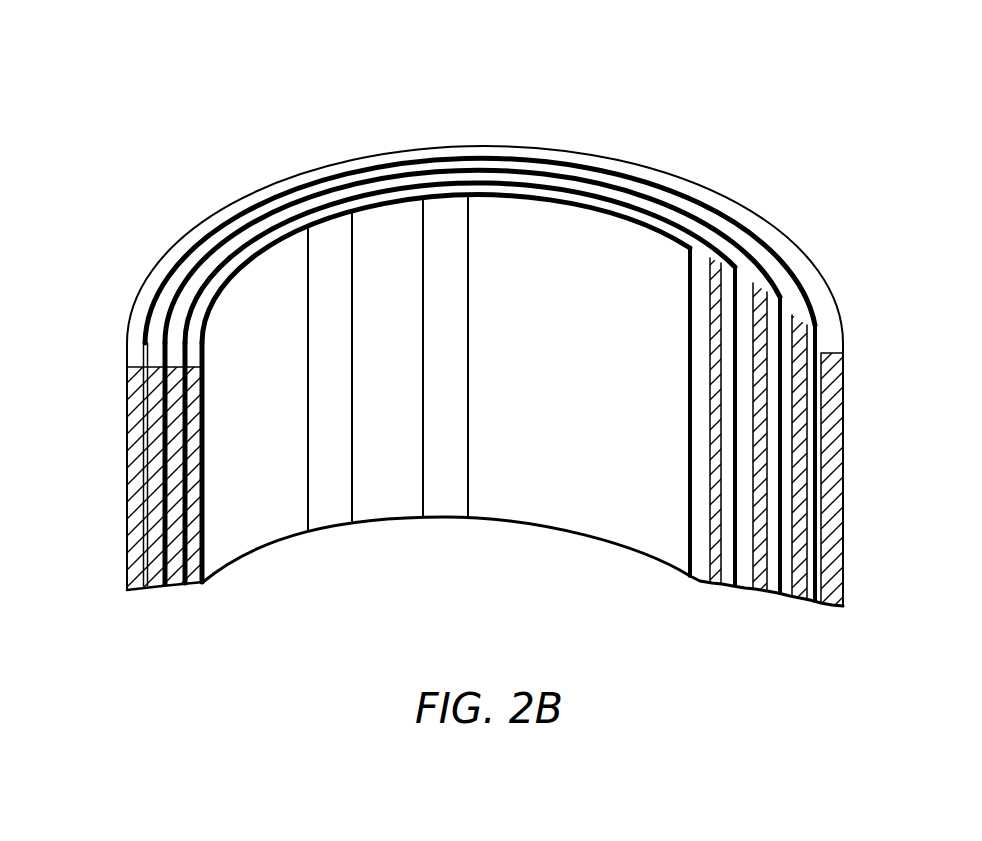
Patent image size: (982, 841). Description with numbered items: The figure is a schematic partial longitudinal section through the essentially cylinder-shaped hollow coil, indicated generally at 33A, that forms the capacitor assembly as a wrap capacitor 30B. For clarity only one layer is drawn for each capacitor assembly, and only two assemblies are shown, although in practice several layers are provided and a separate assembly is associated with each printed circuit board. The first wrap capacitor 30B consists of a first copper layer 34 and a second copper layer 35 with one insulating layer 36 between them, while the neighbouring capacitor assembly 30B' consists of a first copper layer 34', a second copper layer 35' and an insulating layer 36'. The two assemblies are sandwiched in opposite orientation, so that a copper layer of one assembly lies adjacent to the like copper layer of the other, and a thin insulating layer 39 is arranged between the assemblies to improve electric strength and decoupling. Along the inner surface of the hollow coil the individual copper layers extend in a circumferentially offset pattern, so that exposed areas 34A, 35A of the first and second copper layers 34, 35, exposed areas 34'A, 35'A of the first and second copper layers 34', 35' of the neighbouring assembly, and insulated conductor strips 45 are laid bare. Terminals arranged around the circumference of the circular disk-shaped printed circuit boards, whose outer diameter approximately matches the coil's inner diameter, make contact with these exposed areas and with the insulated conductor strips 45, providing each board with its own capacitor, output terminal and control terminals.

The sensor housing / laminated shell assembly 33A is at (558, 130).
The first copper layer 34 is at (449, 376).
The insulating layer 36 is at (440, 379).
The second copper layer 35 is at (429, 381).
The thin insulating layer 39 is at (185, 297).
The second copper layer of another assembly 35' is at (186, 377).
The insulating layer of another assembly 36' is at (466, 361).
The first copper layer of another assembly 34' is at (446, 344).
The insulated conductor strips 45 is at (309, 349).
The exposed area of first copper layer 34A is at (702, 343).
The exposed area of second copper layer of another assembly 35'A is at (674, 437).
The exposed area of second copper layer 35A is at (783, 463).
The exposed area of first copper layer of another assembly 34'A is at (710, 479).
The wrap capacitor 30B is at (143, 636).
The neighbouring capacitor assembly 30B' is at (193, 616).